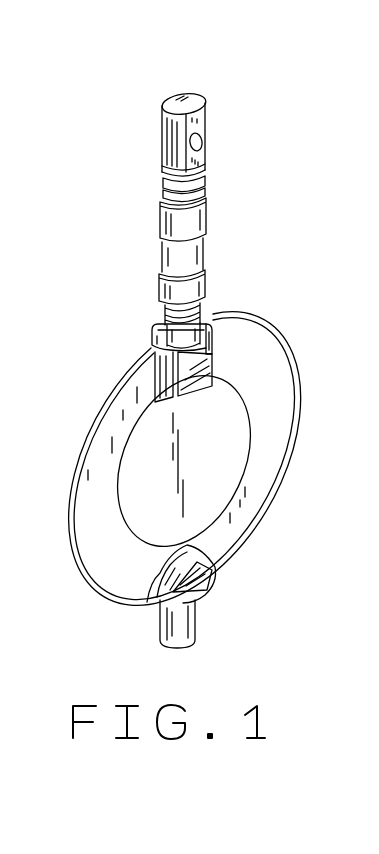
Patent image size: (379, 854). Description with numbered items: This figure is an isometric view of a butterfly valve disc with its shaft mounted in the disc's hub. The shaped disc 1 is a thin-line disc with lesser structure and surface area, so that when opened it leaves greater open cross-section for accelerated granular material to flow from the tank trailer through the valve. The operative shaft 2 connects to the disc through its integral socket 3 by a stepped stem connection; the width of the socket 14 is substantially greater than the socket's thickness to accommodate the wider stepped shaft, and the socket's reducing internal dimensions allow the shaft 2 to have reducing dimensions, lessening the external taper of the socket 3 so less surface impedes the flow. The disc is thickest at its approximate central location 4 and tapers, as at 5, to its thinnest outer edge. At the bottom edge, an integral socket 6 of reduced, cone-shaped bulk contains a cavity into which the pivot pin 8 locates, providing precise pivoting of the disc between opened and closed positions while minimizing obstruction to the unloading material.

The shaped disc 1 is at (195, 369).
The operative shaft 2 is at (207, 207).
The integral socket 3 is at (205, 328).
The central location of thickest configuration 4 is at (218, 473).
The taper 5 is at (278, 405).
The integral socket 6 is at (203, 580).
The pivot pin 8 is at (190, 627).
The width of the socket 14 is at (195, 398).